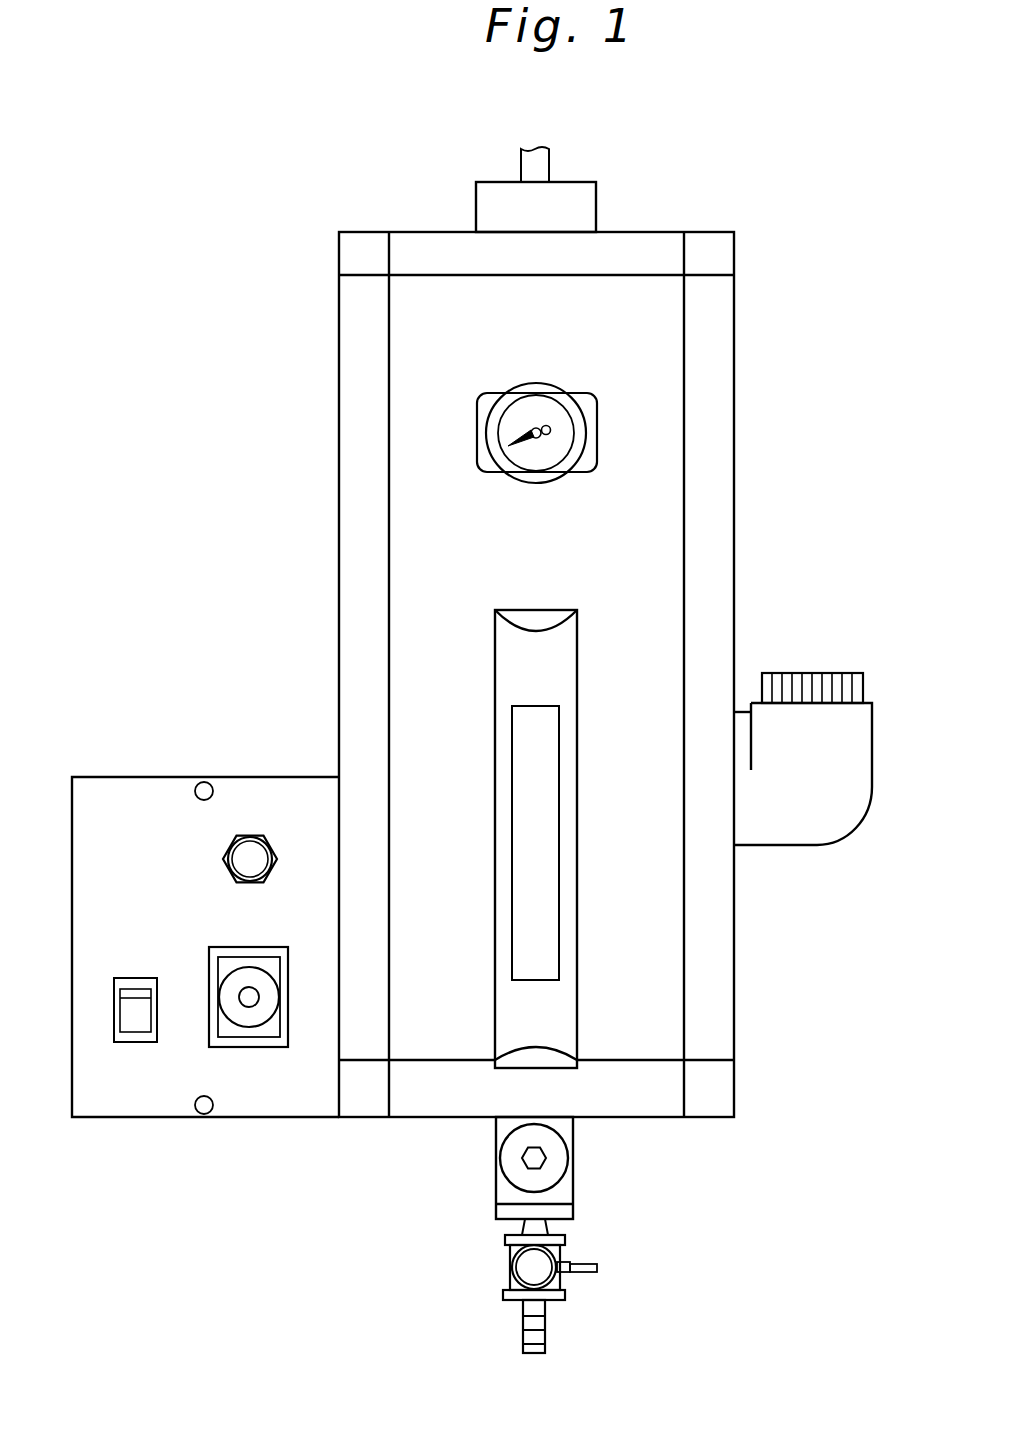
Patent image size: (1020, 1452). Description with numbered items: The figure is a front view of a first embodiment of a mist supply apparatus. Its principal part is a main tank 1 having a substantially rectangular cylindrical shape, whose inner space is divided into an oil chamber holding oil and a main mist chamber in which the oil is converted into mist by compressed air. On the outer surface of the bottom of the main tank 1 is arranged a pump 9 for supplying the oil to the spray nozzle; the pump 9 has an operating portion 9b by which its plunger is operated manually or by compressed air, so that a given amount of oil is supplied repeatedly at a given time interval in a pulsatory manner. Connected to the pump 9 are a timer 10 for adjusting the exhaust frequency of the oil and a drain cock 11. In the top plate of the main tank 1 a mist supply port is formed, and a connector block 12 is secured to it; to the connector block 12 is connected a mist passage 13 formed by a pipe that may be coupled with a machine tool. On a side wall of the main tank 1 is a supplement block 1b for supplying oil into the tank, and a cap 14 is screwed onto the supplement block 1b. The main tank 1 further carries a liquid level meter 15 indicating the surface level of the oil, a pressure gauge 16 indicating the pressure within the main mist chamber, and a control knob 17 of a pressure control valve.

The main tank 1 is at (706, 451).
The supplement block 1b is at (800, 808).
The pump 9 is at (566, 1190).
The operating portion 9b is at (513, 1160).
The timer 10 is at (227, 1028).
The drain cock 11 is at (598, 1270).
The connector block 12 is at (588, 210).
The mist passage 13 is at (535, 166).
The cap 14 is at (812, 683).
The liquid level meter 15 is at (520, 666).
The pressure gauge 16 is at (490, 406).
The control knob 17 is at (247, 848).